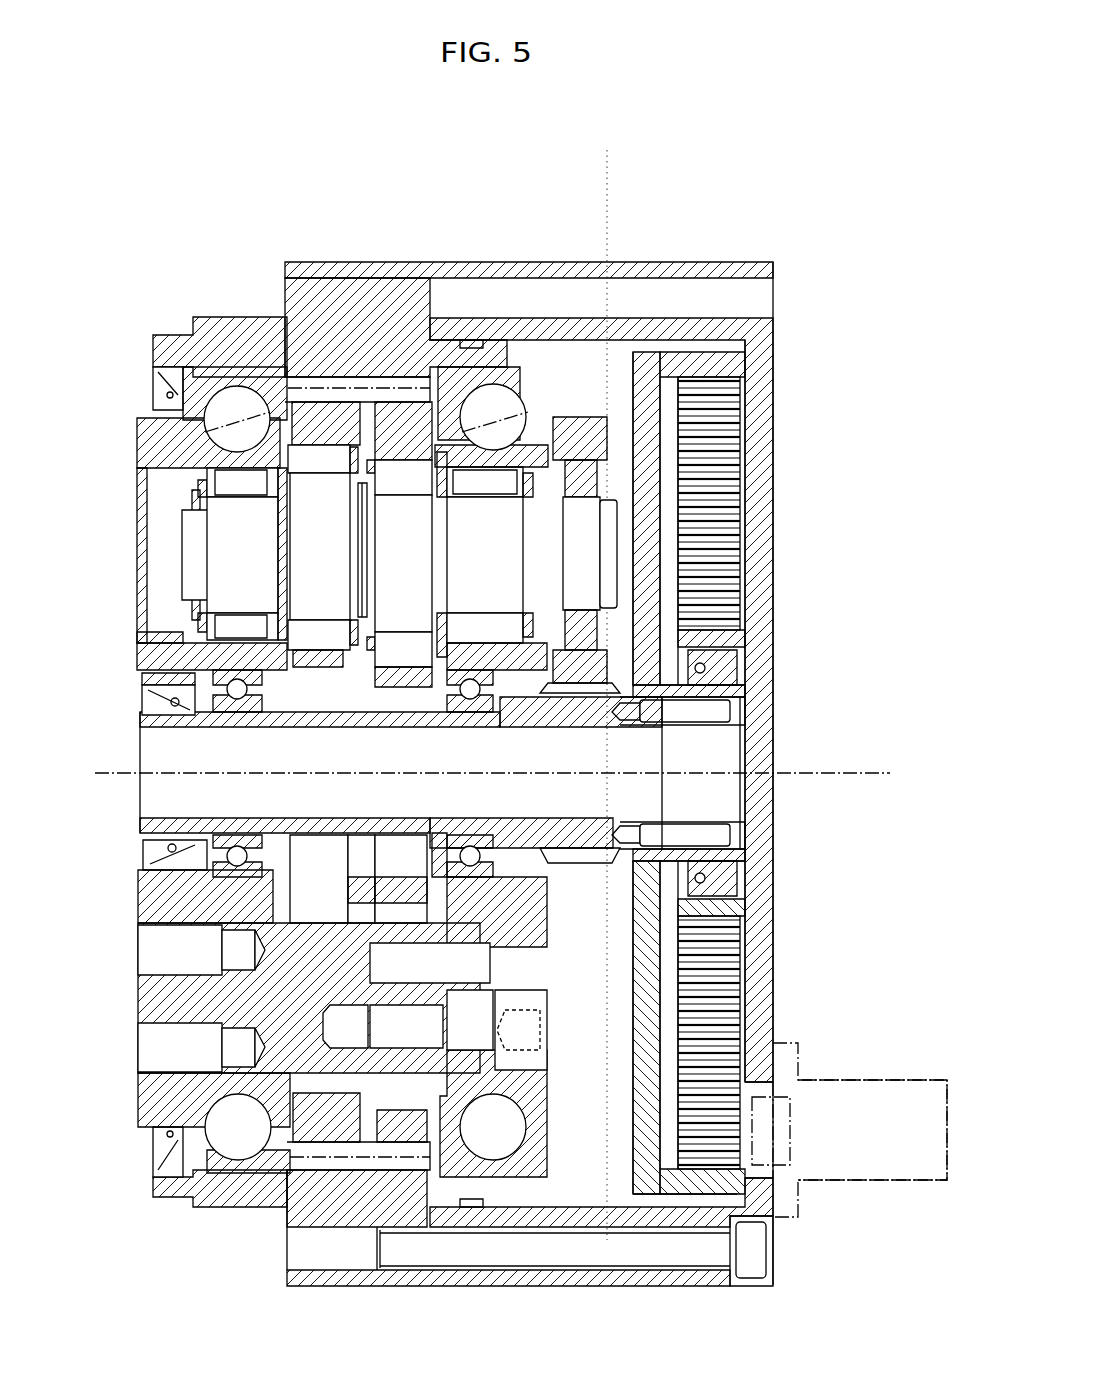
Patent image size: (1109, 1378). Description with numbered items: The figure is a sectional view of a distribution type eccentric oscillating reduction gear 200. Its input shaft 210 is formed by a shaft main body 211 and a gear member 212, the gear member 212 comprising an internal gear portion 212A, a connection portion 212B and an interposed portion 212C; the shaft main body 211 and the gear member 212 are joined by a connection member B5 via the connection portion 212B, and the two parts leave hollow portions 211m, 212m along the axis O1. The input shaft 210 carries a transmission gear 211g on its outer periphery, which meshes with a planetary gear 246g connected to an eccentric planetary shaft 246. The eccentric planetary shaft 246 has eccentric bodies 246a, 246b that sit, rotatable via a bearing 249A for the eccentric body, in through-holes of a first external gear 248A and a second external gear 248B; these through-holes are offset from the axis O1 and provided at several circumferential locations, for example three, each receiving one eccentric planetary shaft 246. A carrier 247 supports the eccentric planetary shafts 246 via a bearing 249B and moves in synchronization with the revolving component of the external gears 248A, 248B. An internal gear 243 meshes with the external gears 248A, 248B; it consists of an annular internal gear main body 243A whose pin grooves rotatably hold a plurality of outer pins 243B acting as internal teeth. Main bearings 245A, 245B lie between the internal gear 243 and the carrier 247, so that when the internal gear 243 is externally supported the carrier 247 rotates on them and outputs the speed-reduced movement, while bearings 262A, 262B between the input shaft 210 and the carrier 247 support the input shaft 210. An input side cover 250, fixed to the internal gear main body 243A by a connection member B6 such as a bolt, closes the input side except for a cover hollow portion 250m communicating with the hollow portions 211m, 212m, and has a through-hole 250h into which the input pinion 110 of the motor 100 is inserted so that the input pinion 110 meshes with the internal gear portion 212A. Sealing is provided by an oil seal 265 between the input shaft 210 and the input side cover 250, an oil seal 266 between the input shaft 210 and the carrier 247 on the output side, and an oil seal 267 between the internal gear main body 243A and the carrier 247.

The eccentric oscillating reduction gear 200 is at (698, 225).
The input side cover 250 is at (773, 352).
The cover hollow portion 250m is at (765, 749).
The through-hole 250h is at (769, 1159).
The connection member B6 is at (753, 1248).
The input pinion 110 is at (740, 1118).
The motor 100 is at (890, 1180).
The internal gear portion 212A is at (729, 453).
The interposed portion 212C is at (650, 545).
The gear member 212 is at (710, 877).
The oil seal 265 is at (735, 649).
The connection portion 212B is at (703, 692).
The connection member B5 is at (752, 712).
The hollow portion 212m is at (722, 795).
The axis O1 is at (512, 772).
The shaft main body 211 is at (730, 897).
The input shaft 210 is at (885, 905).
The transmission gear 211g is at (585, 857).
The hollow portion 211m is at (170, 793).
The internal gear 243 is at (365, 187).
The internal gear main body 243A is at (355, 335).
The outer pins 243B is at (333, 385).
The oil seal 267 is at (168, 366).
The eccentric planetary shaft 246 is at (182, 555).
The eccentric body 246b is at (325, 548).
The eccentric body 246a is at (392, 597).
The planetary gear 246g is at (583, 418).
The main bearing 245B is at (232, 408).
The main bearing 245A is at (500, 405).
The second external gear 248B is at (272, 424).
The first external gear 248A is at (392, 440).
The bearing 249B is at (257, 633).
The bearing for the eccentric body 249A is at (387, 653).
The oil seal 266 is at (168, 700).
The bearing 262B is at (235, 712).
The bearing 262A is at (480, 730).
The carrier 247 is at (262, 975).